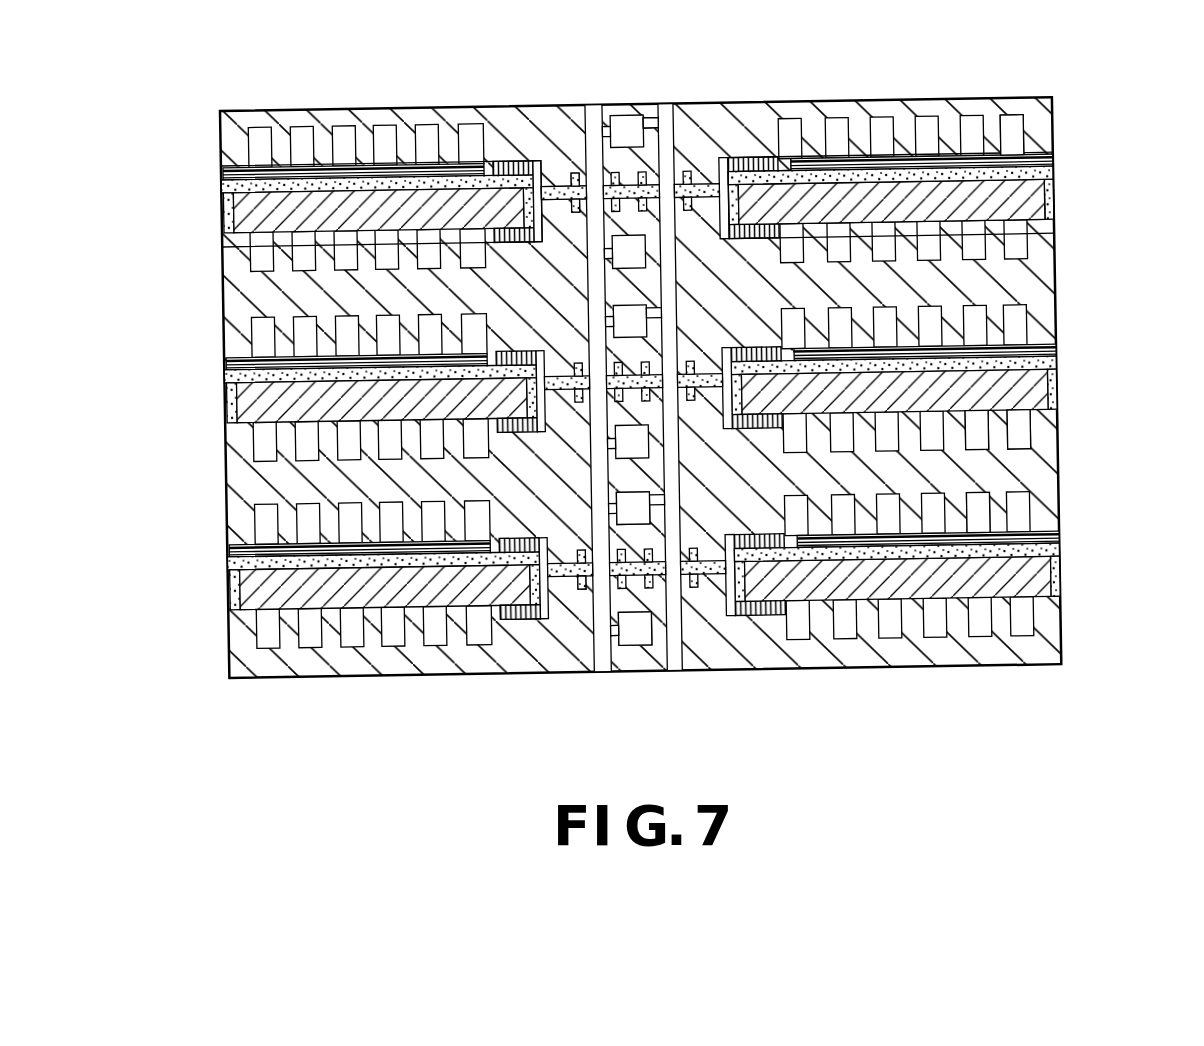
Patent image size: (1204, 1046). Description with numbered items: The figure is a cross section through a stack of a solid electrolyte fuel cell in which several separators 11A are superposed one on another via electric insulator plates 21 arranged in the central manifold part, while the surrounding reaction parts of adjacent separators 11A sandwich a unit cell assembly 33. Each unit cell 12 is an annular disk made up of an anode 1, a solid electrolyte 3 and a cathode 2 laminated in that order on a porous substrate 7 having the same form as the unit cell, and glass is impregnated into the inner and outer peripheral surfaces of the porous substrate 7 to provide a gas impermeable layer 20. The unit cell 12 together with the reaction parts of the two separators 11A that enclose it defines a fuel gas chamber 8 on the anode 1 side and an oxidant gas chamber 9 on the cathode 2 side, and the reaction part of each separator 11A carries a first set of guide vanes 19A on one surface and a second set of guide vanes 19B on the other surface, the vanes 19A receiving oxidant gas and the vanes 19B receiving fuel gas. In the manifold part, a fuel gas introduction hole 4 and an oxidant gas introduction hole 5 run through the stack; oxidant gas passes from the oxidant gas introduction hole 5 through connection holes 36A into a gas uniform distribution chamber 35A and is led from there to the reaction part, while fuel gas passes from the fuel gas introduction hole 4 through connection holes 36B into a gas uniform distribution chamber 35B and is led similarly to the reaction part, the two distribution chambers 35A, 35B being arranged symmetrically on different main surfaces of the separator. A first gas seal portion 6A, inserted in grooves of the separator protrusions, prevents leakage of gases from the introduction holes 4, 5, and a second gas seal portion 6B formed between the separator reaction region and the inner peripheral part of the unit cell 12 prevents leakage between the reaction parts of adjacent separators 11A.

The anode 1 is at (1053, 195).
The cathode 2 is at (1053, 158).
The solid electrolyte 3 is at (1053, 168).
The fuel gas introduction hole 4 is at (600, 662).
The oxidant gas introduction hole 5 is at (663, 137).
The first gas seal portion 6A is at (580, 590).
The second gas seal portion 6B is at (497, 612).
The porous substrate 7 is at (1053, 240).
The fuel gas chamber 8 is at (1018, 437).
The oxidant gas chamber 9 is at (1008, 118).
The separator 11A is at (1053, 275).
The unit cell 12 is at (1137, 113).
The first set of guide vanes 19A is at (990, 520).
The second set of guide vanes 19B is at (997, 448).
The gas impermeable layer 20 is at (1060, 573).
The electric insulator plate 21 is at (558, 185).
The unit cell assembly 33 is at (215, 167).
The gas uniform distribution chamber 35A is at (645, 500).
The gas uniform distribution chamber 35B is at (643, 632).
The connection holes 36A is at (648, 127).
The connection holes 36B is at (613, 630).